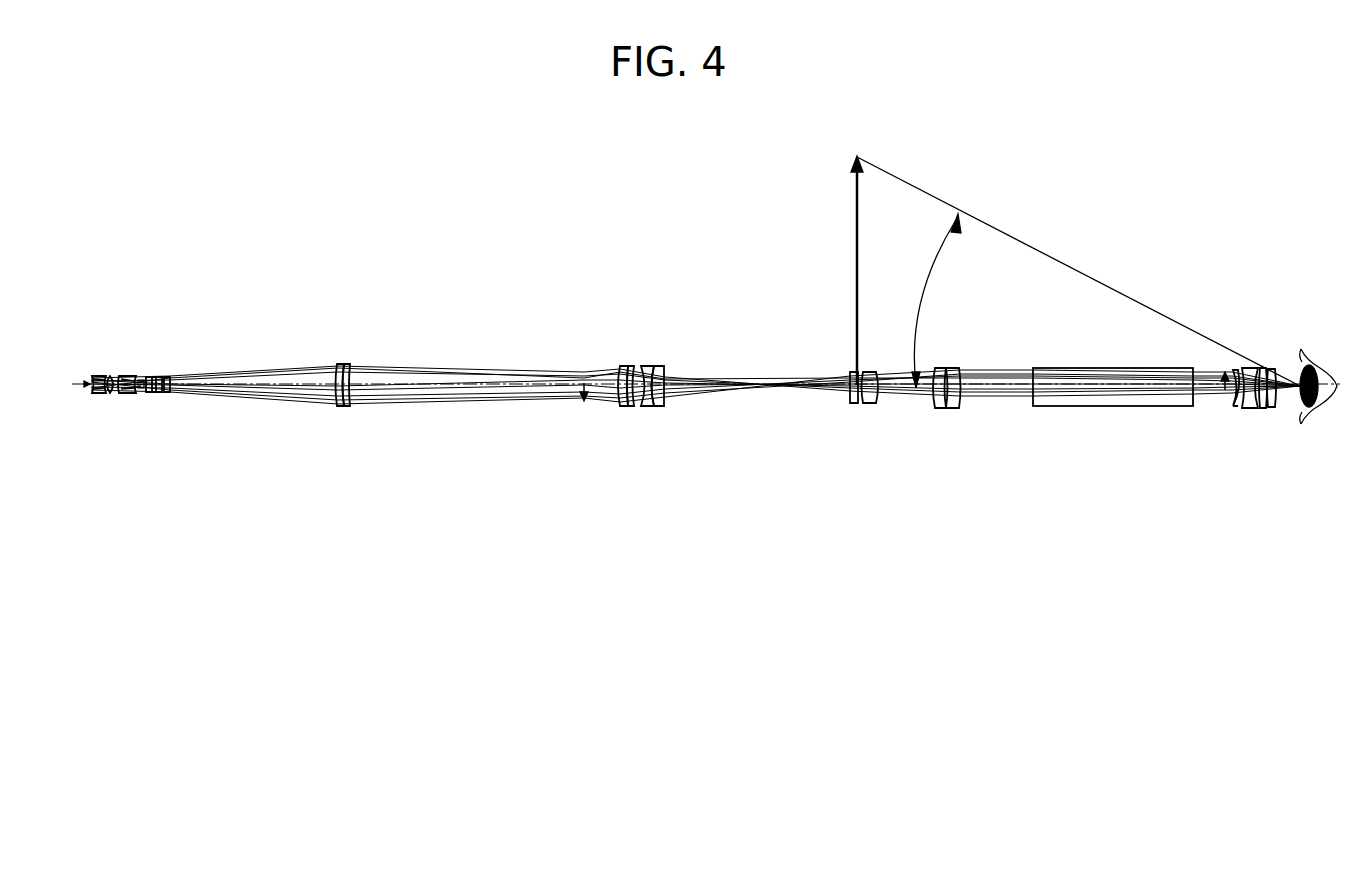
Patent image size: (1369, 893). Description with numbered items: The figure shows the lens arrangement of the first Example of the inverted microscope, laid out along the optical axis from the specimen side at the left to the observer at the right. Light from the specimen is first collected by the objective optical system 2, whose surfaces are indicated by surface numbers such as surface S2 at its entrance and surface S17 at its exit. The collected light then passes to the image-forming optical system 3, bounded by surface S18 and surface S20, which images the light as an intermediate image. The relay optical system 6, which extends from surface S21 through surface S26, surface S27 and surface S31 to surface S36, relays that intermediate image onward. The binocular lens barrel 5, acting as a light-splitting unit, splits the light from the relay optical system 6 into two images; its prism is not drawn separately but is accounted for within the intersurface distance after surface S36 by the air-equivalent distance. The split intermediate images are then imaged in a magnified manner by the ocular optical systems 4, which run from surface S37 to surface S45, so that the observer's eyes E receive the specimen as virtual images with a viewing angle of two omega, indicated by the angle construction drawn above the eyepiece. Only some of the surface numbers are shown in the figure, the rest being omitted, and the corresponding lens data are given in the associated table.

The objective optical system 2 is at (151, 398).
The image-forming optical system 3 is at (345, 397).
The ocular optical systems 4 is at (1222, 392).
The binocular lens barrel 5 is at (1200, 417).
The relay optical system 6 is at (762, 388).
The surface number 2 S2 is at (90, 378).
The surface number 17 S17 is at (172, 378).
The surface number 18 S18 is at (337, 372).
The surface number 20 S20 is at (352, 370).
The surface number 21 S21 is at (620, 372).
The surface number 26 S26 is at (662, 370).
The surface number 27 S27 is at (850, 373).
The surface number 31 S31 is at (876, 371).
The surface number 36 S36 is at (966, 357).
The surface number 37 S37 is at (1232, 400).
The surface number 45 S45 is at (1272, 366).
The eyes E is at (1334, 420).